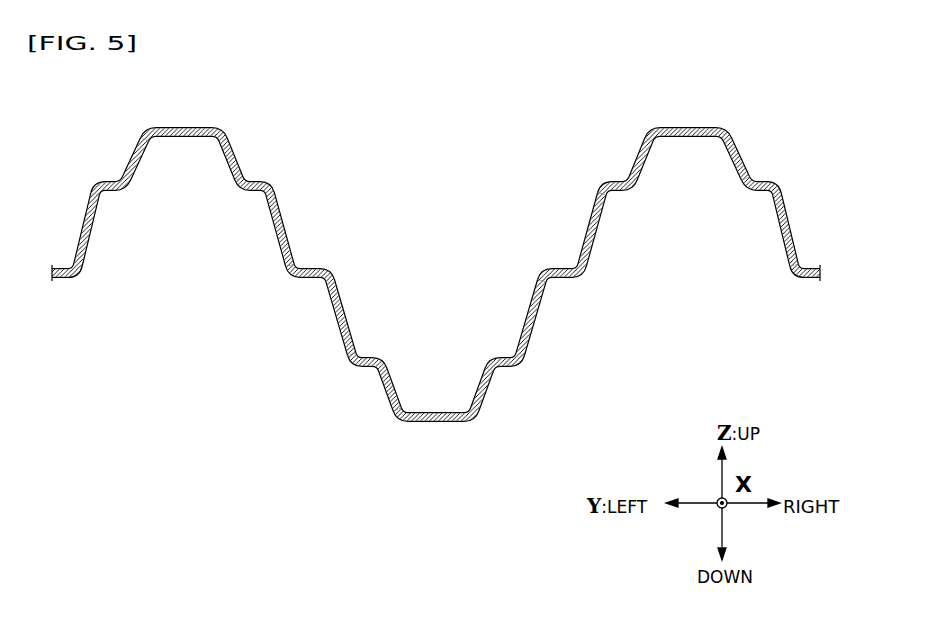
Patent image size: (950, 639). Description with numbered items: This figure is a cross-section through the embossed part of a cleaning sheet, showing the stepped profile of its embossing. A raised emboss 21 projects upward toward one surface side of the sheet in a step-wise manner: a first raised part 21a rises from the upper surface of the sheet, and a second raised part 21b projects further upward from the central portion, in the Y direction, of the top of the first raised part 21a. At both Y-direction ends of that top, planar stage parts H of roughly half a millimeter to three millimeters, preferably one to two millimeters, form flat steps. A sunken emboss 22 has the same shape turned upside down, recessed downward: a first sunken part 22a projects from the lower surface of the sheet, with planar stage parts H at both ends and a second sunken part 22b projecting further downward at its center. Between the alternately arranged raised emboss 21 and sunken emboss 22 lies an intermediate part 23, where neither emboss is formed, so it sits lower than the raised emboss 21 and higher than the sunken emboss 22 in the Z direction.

The raised emboss 21 is at (352, 98).
The first raised part 21a is at (278, 217).
The second raised part 21b is at (233, 155).
The sunken emboss 22 is at (245, 302).
The first sunken part 22a is at (337, 333).
The second sunken part 22b is at (387, 400).
The intermediate part 23 is at (70, 273).
The planar stage part H is at (118, 177).